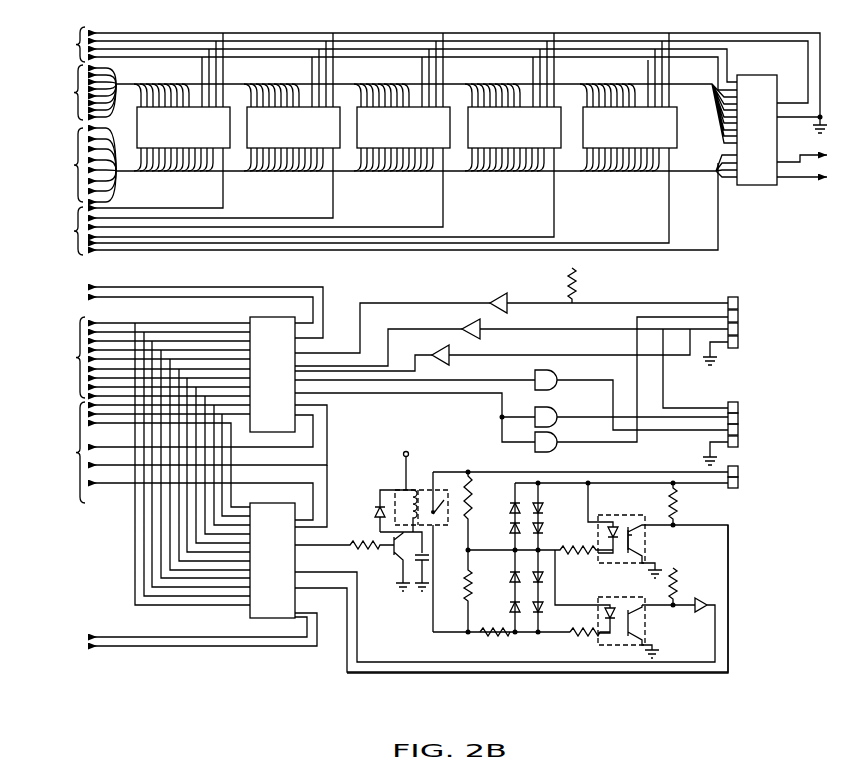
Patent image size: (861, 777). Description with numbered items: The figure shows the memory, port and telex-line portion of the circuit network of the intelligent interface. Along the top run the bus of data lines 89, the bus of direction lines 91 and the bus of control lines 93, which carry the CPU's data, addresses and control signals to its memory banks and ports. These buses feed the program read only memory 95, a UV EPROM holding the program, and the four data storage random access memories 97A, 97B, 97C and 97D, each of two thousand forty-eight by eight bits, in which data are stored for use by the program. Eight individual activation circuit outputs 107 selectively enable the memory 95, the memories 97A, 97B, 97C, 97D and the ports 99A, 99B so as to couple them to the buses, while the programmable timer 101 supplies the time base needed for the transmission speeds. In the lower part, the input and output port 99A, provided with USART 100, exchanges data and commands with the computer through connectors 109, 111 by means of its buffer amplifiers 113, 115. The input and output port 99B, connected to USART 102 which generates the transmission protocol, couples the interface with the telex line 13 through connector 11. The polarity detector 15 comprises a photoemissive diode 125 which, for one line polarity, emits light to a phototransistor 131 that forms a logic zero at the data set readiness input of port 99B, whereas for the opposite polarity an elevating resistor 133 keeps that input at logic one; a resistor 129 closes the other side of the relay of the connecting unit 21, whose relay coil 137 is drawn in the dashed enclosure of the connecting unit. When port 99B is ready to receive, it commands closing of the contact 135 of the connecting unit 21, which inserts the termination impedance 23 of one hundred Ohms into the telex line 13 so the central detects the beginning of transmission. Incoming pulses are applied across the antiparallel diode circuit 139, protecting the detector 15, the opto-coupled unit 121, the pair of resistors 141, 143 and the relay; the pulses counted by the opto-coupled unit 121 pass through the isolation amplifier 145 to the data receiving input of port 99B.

The bus of control lines 93 is at (78, 30).
The program read only memory 95 is at (667, 145).
The USART 100 is at (590, 4).
The bus of data lines 89 is at (76, 360).
The bus of direction lines 91 is at (379, 165).
The activation circuit outputs 107 is at (77, 228).
The data storage random access memory 97A is at (173, 142).
The data storage random access memory 97B is at (250, 142).
The data storage random access memory 97C is at (363, 142).
The data storage random access memory 97D is at (475, 142).
The programmable timer 101 is at (763, 172).
The input and output port 99A is at (258, 322).
The input and output port 99B is at (257, 612).
The USART 102 is at (295, 540).
The buffer amplifier 115 is at (437, 293).
The buffer amplifier 113 is at (563, 378).
The connector 111 is at (747, 318).
The connector 109 is at (742, 423).
The connector 11 is at (745, 483).
The telex line 13 is at (648, 482).
The polarity (call) detector 15 is at (647, 515).
The connecting unit 21 is at (417, 490).
The termination impedance 23 is at (467, 588).
The opto-coupled unit 121 is at (618, 597).
The photoemissive diode 125 is at (584, 542).
The resistor 129 is at (473, 508).
The phototransistor 131 is at (657, 542).
The elevating resistor 133 is at (680, 500).
The contact 135 is at (440, 507).
The relay coil 137 is at (398, 490).
The antiparallel diode circuit 139 is at (545, 523).
The resistor 141 is at (580, 647).
The resistor 143 is at (493, 638).
The isolation amplifier 145 is at (702, 598).